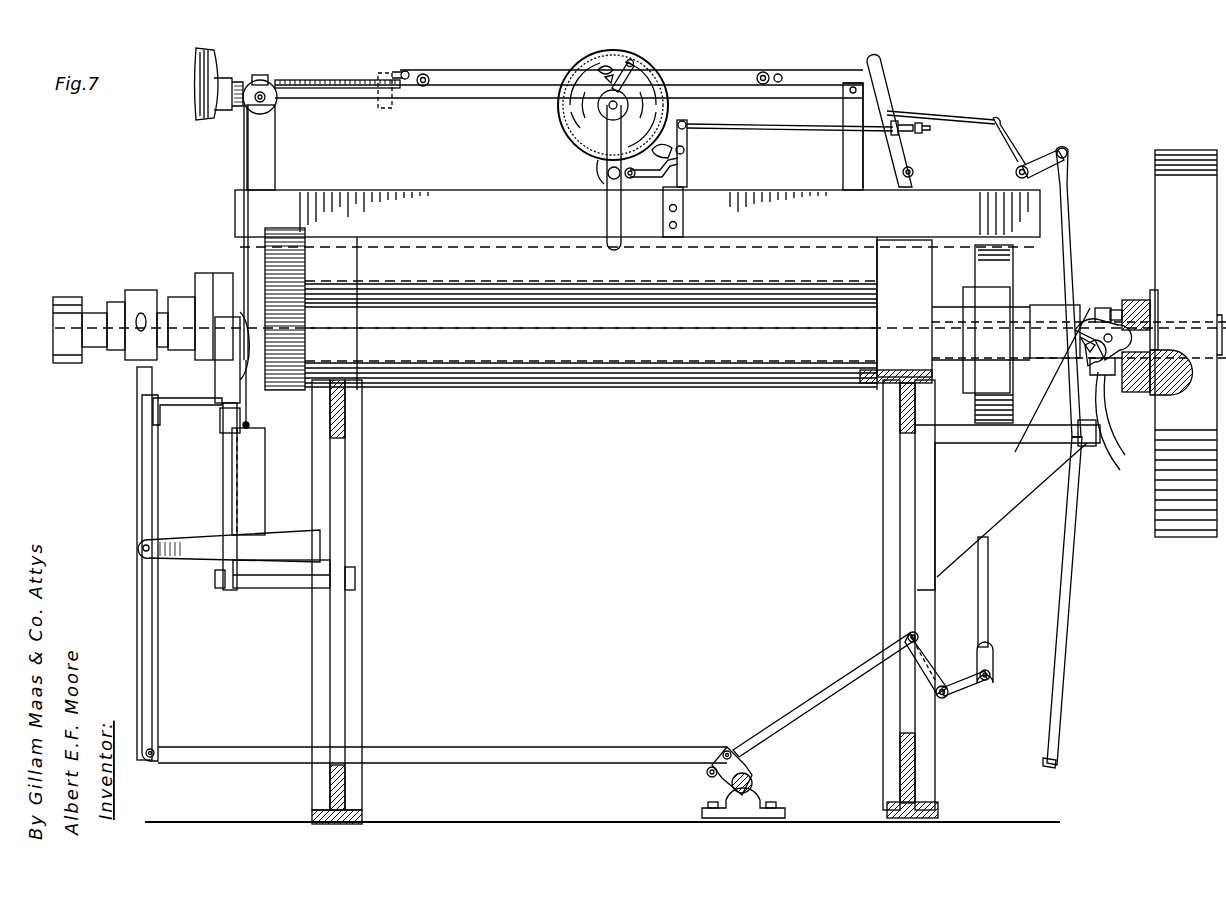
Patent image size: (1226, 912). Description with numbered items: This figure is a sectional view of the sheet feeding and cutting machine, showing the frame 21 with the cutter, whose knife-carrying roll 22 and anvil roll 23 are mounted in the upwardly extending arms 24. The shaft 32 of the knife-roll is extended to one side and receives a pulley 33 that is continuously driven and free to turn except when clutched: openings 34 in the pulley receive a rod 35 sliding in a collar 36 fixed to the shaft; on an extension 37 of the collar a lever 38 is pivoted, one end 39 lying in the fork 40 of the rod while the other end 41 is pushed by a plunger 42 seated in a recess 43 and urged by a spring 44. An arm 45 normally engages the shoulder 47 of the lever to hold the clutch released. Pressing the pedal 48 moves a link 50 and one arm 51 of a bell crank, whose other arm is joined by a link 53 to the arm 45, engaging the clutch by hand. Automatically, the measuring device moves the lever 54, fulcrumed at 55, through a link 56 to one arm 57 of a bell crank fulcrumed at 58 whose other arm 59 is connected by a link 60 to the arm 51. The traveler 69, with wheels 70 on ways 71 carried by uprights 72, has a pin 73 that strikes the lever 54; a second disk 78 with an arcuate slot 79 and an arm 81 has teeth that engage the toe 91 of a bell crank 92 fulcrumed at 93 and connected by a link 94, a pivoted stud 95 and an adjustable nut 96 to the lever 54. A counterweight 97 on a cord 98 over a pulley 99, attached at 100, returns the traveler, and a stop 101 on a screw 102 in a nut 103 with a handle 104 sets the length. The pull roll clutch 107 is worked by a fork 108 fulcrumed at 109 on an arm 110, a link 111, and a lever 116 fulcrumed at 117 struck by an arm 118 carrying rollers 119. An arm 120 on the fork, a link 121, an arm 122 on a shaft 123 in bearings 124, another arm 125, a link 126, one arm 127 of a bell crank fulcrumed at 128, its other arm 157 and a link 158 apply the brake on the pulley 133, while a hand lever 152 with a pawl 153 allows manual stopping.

The frame 21 is at (345, 496).
The knife-carrying roll 22 is at (507, 345).
The anvil roll 23 is at (450, 252).
The upwardly extending arms 24 is at (598, 330).
The shaft 32 is at (790, 345).
The pulley 33 is at (1188, 343).
The openings 34 is at (1152, 396).
The rod 35 is at (1138, 392).
The collar 36 is at (1148, 340).
The extension 37 is at (1080, 310).
The lever 38 is at (1082, 340).
The end of lever 39 is at (1120, 470).
The fork 40 is at (1125, 455).
The other end of lever 41 is at (1096, 320).
The plunger 42 is at (1110, 305).
The recess 43 is at (1152, 310).
The spring 44 is at (1137, 300).
The arm 45 is at (1050, 392).
The shoulder 47 is at (1082, 332).
The pedal 48 is at (1042, 764).
The link 50 is at (1080, 520).
The arm of bell crank 51 is at (1083, 446).
The link 53 is at (1088, 378).
The lever 54 is at (884, 82).
The fulcrum 55 is at (915, 172).
The link 56 is at (940, 117).
The arm of bell crank 57 is at (1010, 140).
The fulcrum 58 is at (1015, 173).
The arm of bell crank 59 is at (1064, 149).
The link 60 is at (1073, 228).
The traveler 69 is at (728, 72).
The wheels 70 is at (430, 80).
The ways 71 is at (812, 97).
The uprights 72 is at (272, 146).
The pin 73 is at (781, 75).
The second disk 78 is at (580, 75).
The arcuate slot 79 is at (606, 66).
The arm 81 is at (628, 62).
The toe 91 is at (680, 162).
The bell crank 92 is at (688, 138).
The fulcrum 93 is at (688, 152).
The link 94 is at (780, 129).
The pivoted stud 95 is at (894, 136).
The adjustable nut 96 is at (921, 134).
The counterweight 97 is at (248, 469).
The cord 98 is at (243, 163).
The pulley 99 is at (258, 79).
The attachment point 100 is at (405, 72).
The stop 101 is at (385, 110).
The screw 102 is at (330, 78).
The nut 103 is at (266, 76).
The handle 104 is at (197, 92).
The clutch 107 is at (66, 295).
The fork 108 is at (140, 462).
The fulcrum 109 is at (150, 548).
The arm 110 is at (270, 552).
The link 111 is at (190, 400).
The lever 116 is at (232, 488).
The fulcrum 117 is at (215, 580).
The arm 118 is at (226, 398).
The rollers 119 is at (222, 426).
The arm 120 is at (152, 748).
The link 121 is at (492, 762).
The arm 122 is at (738, 750).
The shaft 123 is at (755, 782).
The bearings 124 is at (762, 803).
The arm 125 is at (708, 778).
The link 126 is at (805, 708).
The arm of bell crank 127 is at (938, 660).
The fulcrum 128 is at (946, 698).
The pulley 133 is at (982, 273).
The hand lever 152 is at (612, 226).
The pawl 153 is at (606, 174).
The arm of bell crank 157 is at (968, 687).
The link 158 is at (990, 558).